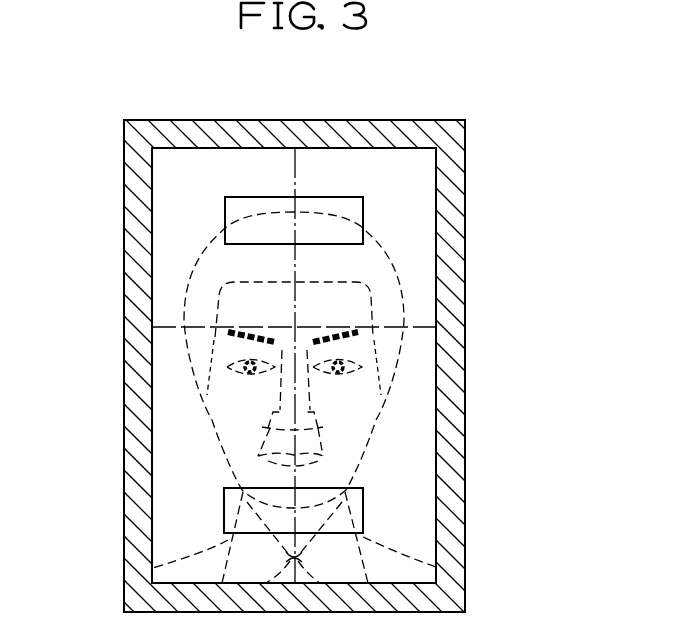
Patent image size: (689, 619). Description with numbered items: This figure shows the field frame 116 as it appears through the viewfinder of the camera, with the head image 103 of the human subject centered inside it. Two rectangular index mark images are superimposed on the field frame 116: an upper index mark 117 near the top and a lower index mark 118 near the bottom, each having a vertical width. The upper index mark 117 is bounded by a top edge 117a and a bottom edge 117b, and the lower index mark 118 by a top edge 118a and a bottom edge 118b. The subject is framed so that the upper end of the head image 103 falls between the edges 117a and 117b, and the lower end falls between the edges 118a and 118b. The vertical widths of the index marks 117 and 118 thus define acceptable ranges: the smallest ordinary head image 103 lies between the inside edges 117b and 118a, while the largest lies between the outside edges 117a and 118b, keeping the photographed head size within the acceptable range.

The field frame 116 is at (376, 150).
The index mark 117 is at (357, 213).
The top edge of index mark 117a is at (245, 197).
The bottom edge of index mark 117b is at (248, 244).
The index mark 118 is at (363, 515).
The top edge of index mark 118a is at (265, 491).
The bottom edge of index mark 118b is at (266, 535).
The head image 103 is at (362, 446).